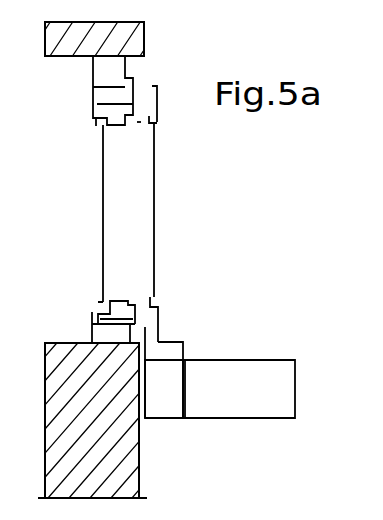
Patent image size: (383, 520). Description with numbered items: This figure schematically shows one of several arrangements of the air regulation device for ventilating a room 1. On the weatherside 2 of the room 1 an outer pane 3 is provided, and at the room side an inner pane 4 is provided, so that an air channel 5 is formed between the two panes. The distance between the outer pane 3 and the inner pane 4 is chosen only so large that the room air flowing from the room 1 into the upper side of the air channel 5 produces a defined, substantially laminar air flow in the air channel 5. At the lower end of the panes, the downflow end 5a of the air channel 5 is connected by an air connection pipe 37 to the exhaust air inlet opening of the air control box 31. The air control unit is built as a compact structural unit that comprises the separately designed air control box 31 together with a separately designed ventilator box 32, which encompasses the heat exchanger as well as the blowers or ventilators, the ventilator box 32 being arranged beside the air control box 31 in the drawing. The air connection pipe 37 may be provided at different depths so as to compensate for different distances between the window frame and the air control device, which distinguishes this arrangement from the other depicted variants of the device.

The room 1 is at (201, 209).
The weatherside 2 is at (75, 204).
The outer pane 3 is at (103, 256).
The inner pane 4 is at (155, 175).
The air channel 5 is at (136, 216).
The downflow end of the air channel 5a is at (148, 316).
The air connection pipe 37 is at (175, 351).
The air control box 31 is at (168, 410).
The ventilator box 32 is at (285, 410).